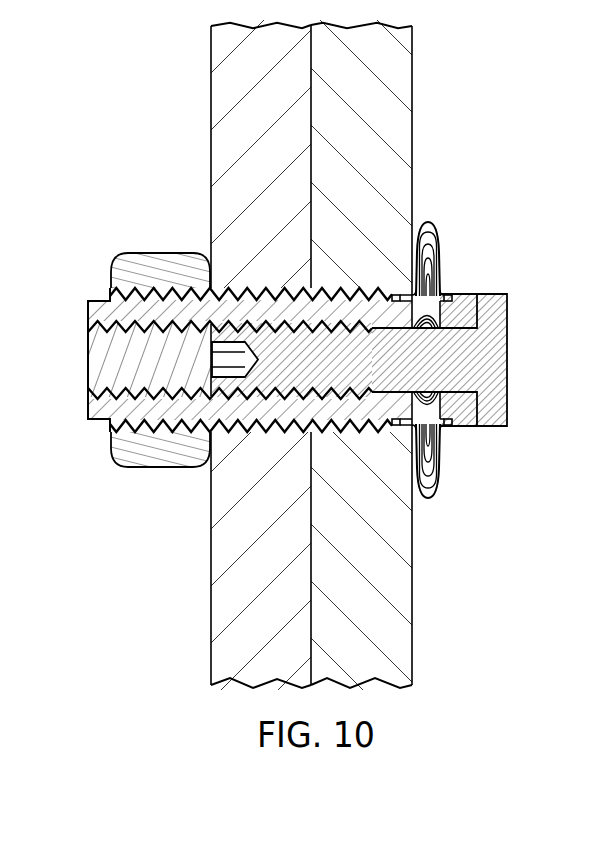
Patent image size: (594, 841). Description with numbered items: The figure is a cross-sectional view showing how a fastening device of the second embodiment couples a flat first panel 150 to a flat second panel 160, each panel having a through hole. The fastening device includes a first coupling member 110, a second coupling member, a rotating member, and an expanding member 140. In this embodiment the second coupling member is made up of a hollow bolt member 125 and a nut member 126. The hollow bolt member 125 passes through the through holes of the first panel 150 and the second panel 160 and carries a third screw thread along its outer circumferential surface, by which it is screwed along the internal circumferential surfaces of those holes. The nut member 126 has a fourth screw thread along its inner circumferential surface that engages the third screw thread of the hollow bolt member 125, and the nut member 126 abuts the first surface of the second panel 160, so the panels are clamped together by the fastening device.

The first coupling member 110 is at (486, 357).
The hollow bolt member 125 is at (98, 409).
The nut member 126 is at (142, 262).
The expanding member 140 is at (437, 252).
The first panel 150 is at (388, 122).
The second panel 160 is at (234, 123).